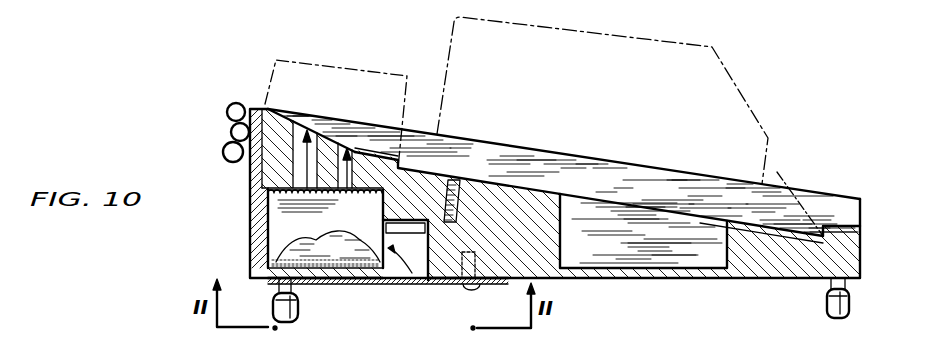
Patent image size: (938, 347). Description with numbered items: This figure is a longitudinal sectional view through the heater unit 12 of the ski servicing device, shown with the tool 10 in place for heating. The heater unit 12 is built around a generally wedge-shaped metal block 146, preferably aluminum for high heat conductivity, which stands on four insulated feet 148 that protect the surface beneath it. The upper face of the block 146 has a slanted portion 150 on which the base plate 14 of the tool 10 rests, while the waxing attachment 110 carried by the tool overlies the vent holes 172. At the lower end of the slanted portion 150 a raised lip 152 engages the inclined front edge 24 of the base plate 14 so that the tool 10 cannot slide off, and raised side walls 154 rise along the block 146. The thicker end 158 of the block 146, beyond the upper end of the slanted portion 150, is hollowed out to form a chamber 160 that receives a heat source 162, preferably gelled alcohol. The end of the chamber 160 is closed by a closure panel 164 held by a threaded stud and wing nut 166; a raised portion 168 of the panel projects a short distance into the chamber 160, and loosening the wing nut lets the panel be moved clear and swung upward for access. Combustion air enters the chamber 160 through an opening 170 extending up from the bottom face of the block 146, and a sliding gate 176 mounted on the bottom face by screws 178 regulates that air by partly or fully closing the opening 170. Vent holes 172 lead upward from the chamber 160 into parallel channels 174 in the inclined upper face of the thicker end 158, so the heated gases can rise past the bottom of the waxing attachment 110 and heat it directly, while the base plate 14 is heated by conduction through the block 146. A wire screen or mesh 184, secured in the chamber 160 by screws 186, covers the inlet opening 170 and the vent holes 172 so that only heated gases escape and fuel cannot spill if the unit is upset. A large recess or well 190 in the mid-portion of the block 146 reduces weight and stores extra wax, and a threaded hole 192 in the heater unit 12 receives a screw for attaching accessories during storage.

The handle and mounting plate assembly 10 is at (634, 44).
The heater unit 12 is at (663, 298).
The base plate 14 is at (762, 198).
The inclined front edge 24 is at (800, 202).
The waxing attachment 110 is at (342, 58).
The wedge-shaped metal block 146 is at (547, 247).
The insulated feet 148 is at (290, 318).
The slanted portion 150 is at (497, 178).
The raised lip 152 is at (837, 227).
The raised side walls 154 is at (818, 198).
The thicker end 158 is at (292, 110).
The chamber 160 is at (273, 222).
The heat source 162 is at (323, 270).
The closure panel 164 is at (258, 165).
The threaded stud and wing nut 166 is at (230, 108).
The raised portion 168 is at (270, 252).
The opening 170 is at (393, 280).
The vent holes 172 is at (353, 150).
The parallel channels 174 is at (323, 140).
The sliding gate 176 is at (418, 282).
The screws 178 is at (463, 289).
The wire screen or mesh 184 is at (287, 193).
The screws 186 is at (425, 213).
The recess or well 190 is at (693, 247).
The threaded hole 192 is at (452, 182).